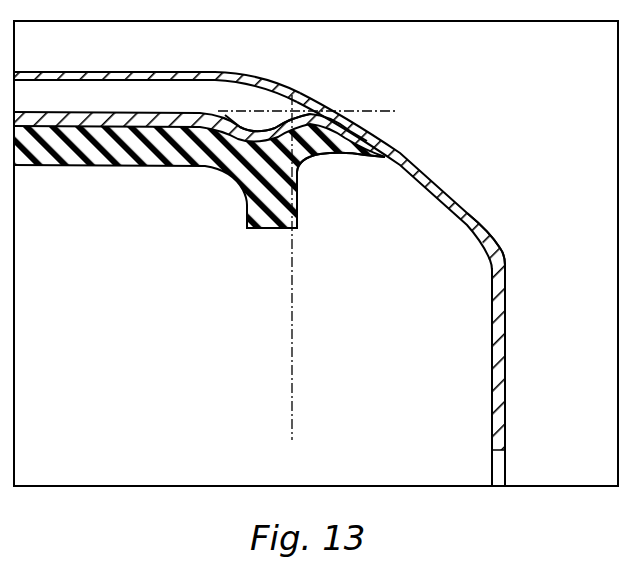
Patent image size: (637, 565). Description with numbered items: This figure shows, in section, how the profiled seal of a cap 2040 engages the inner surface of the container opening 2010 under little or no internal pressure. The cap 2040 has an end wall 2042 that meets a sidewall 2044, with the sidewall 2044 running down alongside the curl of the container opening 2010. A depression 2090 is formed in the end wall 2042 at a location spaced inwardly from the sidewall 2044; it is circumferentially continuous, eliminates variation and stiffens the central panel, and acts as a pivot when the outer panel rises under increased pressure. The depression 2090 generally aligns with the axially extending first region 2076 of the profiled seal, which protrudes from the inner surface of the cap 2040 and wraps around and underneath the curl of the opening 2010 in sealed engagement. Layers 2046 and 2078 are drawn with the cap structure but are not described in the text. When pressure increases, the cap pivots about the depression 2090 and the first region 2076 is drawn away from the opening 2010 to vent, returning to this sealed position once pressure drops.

The container opening 2010 is at (310, 95).
The cap 2040 is at (498, 225).
The end wall 2042 is at (133, 128).
The sidewall 2044 is at (508, 383).
The outer skin layer 2046 is at (72, 135).
The first region 2076 is at (260, 216).
The bonded region 2078 is at (327, 148).
The depression 2090 is at (265, 128).